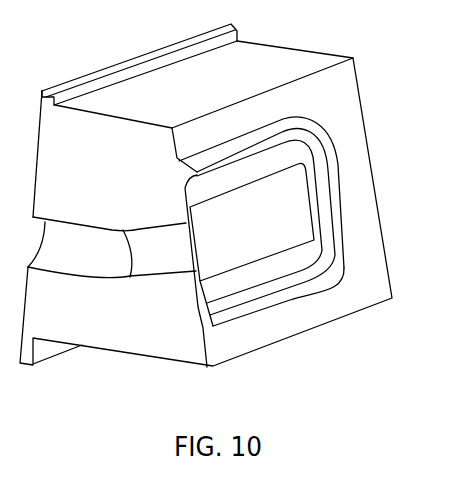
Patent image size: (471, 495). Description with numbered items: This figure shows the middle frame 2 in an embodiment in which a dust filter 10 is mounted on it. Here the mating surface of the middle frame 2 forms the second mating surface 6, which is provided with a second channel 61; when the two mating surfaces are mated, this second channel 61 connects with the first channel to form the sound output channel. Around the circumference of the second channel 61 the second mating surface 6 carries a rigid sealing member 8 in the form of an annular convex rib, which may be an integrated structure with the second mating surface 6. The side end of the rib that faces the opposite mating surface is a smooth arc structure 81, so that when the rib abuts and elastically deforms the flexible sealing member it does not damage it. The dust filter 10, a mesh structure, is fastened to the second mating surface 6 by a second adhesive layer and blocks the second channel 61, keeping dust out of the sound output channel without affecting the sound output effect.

The middle frame 2 is at (143, 85).
The second mating surface 6 is at (372, 290).
The rigid sealing member 8 is at (203, 322).
The smooth arc structure 81 is at (217, 315).
The dust filter 10 is at (193, 212).
The second channel 61 is at (162, 266).